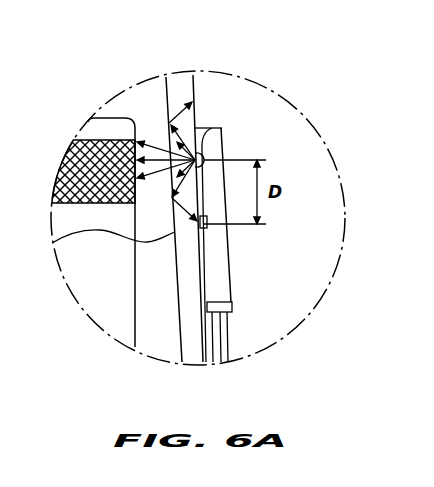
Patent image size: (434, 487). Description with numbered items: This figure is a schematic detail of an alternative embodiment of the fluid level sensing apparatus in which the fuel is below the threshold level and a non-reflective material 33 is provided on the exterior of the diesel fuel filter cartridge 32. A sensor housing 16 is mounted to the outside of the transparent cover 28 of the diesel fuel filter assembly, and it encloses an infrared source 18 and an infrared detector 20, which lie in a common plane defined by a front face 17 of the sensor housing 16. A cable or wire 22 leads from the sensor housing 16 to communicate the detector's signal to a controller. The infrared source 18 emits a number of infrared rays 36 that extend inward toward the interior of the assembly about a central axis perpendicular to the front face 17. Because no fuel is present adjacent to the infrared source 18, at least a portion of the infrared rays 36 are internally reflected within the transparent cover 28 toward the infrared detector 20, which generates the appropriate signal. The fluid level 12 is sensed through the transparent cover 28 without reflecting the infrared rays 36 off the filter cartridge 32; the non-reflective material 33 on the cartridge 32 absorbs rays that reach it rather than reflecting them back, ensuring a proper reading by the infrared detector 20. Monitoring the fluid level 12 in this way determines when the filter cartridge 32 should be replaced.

The fluid level 12 is at (107, 233).
The sensor housing 16 is at (230, 277).
The front face 17 is at (232, 312).
The infrared source 18 is at (221, 133).
The infrared detector 20 is at (205, 228).
The cable or wire 22 is at (228, 333).
The transparent cover 28 is at (197, 318).
The filter cartridge 32 is at (90, 121).
The non-reflective material 33 is at (60, 168).
The infrared rays 36 is at (152, 143).